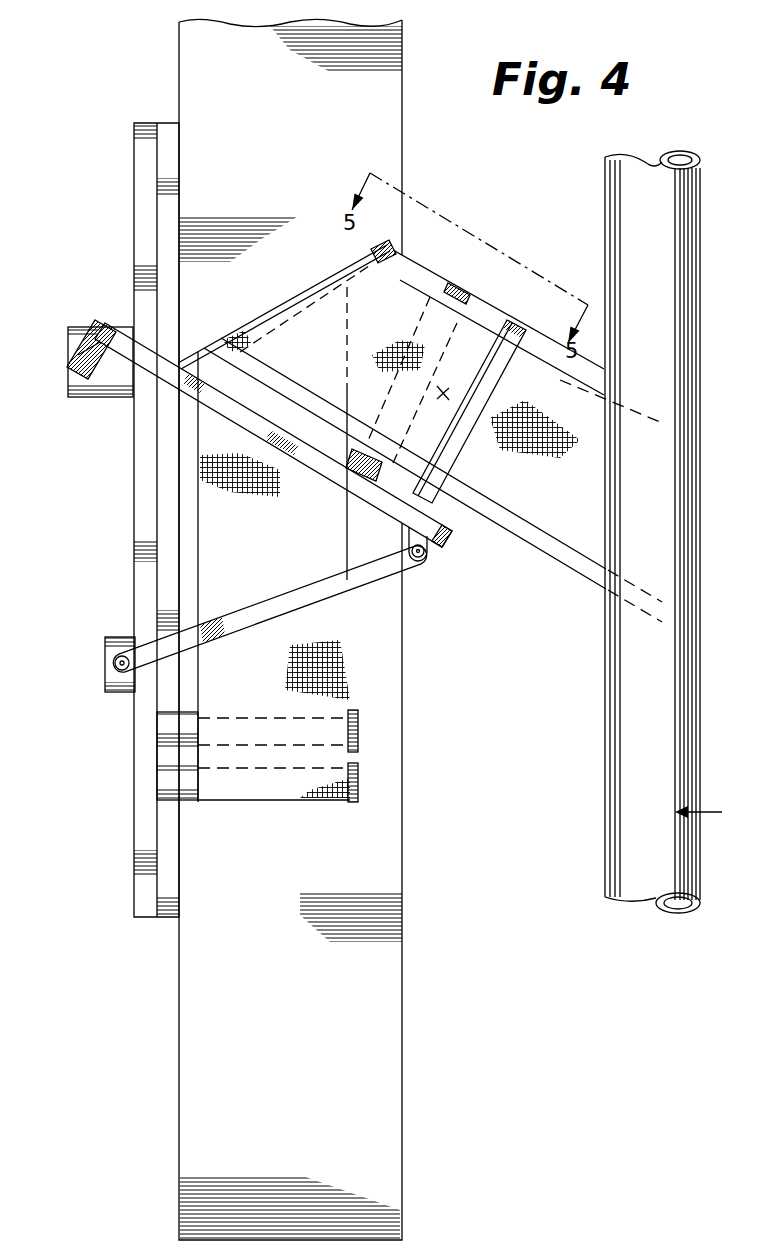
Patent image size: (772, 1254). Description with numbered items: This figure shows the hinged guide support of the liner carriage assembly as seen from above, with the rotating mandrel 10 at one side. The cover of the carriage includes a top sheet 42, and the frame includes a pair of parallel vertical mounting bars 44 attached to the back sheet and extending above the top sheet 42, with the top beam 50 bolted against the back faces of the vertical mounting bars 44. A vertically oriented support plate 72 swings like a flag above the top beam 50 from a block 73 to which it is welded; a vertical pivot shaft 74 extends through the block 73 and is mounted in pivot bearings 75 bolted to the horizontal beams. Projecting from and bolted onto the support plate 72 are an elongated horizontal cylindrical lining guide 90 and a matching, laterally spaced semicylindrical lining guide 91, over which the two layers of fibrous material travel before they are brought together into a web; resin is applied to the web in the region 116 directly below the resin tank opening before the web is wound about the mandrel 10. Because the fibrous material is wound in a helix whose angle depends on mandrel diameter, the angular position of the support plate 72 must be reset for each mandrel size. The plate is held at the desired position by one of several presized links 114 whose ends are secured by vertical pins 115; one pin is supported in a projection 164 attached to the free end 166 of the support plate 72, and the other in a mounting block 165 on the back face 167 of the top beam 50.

The mandrel 10 is at (633, 892).
The top sheet 42 is at (390, 992).
The vertical mounting bars 44 is at (162, 130).
The top beam 50 is at (145, 572).
The support plate 72 is at (327, 468).
The block 73 is at (78, 362).
The pivot shaft 74 is at (108, 380).
The pivot bearings 75 is at (70, 382).
The cylindrical lining guide 90 is at (430, 282).
The semicylindrical lining guide 91 is at (372, 250).
The presized links 114 is at (384, 566).
The vertical pins 115 is at (423, 557).
The region of the web 116 is at (455, 395).
The projection 164 is at (425, 553).
The mounting block 165 is at (107, 692).
The free end 166 is at (450, 538).
The back face 167 is at (133, 797).